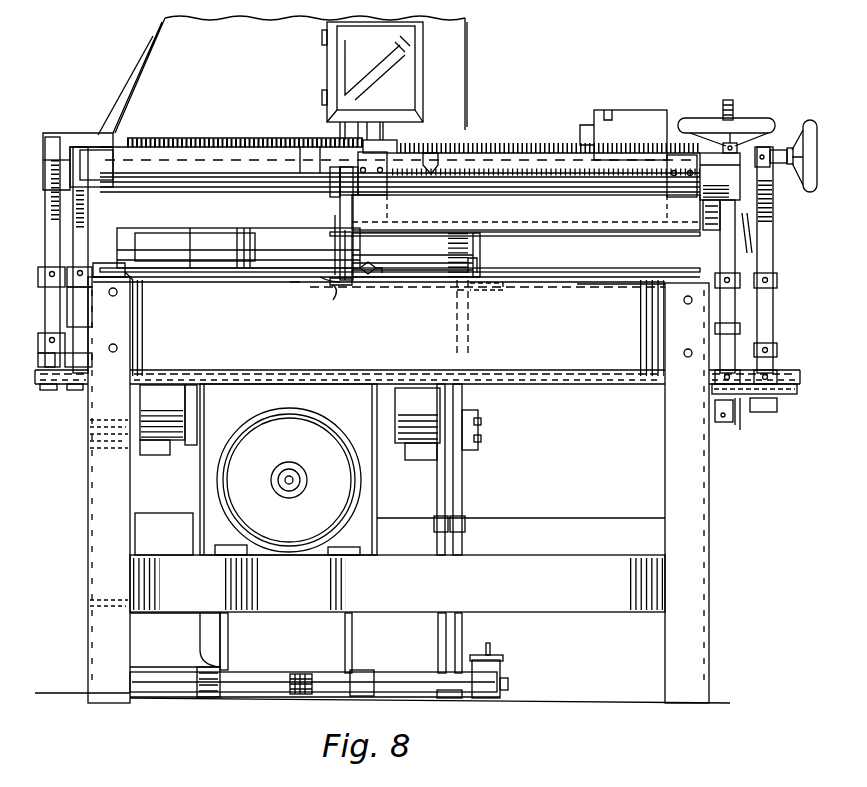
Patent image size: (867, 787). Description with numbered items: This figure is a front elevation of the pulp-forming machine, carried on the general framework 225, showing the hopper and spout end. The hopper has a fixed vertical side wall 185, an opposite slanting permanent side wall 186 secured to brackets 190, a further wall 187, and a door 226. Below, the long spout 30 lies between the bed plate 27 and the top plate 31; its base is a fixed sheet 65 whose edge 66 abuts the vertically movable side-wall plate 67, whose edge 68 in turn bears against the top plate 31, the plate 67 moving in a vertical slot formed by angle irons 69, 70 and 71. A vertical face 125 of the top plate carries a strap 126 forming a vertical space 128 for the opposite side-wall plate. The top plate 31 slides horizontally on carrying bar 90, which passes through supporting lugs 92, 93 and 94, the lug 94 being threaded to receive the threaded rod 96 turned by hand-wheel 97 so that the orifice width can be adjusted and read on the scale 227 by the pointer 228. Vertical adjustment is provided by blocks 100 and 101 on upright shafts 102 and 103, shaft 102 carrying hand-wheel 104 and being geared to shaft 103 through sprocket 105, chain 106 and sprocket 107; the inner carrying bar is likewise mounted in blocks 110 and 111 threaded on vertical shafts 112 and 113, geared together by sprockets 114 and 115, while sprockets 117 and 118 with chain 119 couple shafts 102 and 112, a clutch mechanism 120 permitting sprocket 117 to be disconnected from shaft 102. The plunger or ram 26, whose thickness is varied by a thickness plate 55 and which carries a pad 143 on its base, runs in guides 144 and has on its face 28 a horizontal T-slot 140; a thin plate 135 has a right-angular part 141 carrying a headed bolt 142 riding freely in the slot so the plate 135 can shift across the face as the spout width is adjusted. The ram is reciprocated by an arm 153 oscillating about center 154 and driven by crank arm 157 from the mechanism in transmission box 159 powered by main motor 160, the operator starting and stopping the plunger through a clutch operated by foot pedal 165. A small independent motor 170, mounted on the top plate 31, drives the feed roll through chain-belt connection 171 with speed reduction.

The plunger 26 is at (241, 282).
The bed plate 27 is at (320, 282).
The plunger face 28 is at (297, 278).
The spout 30 is at (432, 250).
The top plate 31 is at (610, 238).
The thickness plate 55 is at (275, 238).
The bed plate sheet 65 is at (333, 285).
The edge 66 is at (490, 278).
The spout side-wall plate 67 is at (474, 246).
The edge 68 is at (465, 248).
The angle iron 69 is at (480, 265).
The angle iron 70 is at (457, 322).
The angle iron 71 is at (475, 305).
The carrying bar 90 is at (222, 162).
The supporting lug 92 is at (330, 155).
The supporting lug 93 is at (676, 165).
The supporting lug 94 is at (395, 145).
The threaded rod 96 is at (555, 150).
The hand-wheel 97 is at (784, 260).
The block 100 is at (718, 165).
The block 101 is at (103, 153).
The upright shaft 102 is at (740, 264).
The upright shaft 103 is at (88, 220).
The hand-wheel 104 is at (740, 148).
The sprocket 105 is at (710, 390).
The chain 106 is at (575, 420).
The sprocket 107 is at (85, 392).
The block 110 is at (714, 146).
The block 111 is at (55, 137).
The vertical shaft 112 is at (765, 255).
The vertical shaft 113 is at (50, 227).
The sprocket 114 is at (782, 382).
The sprocket 115 is at (80, 392).
The sprocket 117 is at (725, 422).
The sprocket 118 is at (758, 412).
The chain 119 is at (750, 420).
The clutch mechanism 120 is at (727, 440).
The vertical face of top plate 125 is at (335, 222).
The leg 126 is at (345, 185).
The vertical space 128 is at (385, 198).
The thin plate 135 is at (333, 282).
The T-slot 140 is at (156, 269).
The right angular part 141 is at (366, 262).
The headed bolt 142 is at (380, 270).
The thickness pad 143 is at (238, 240).
The guide 144 is at (120, 283).
The arm 153 is at (474, 640).
The center 154 is at (540, 678).
The crank arm 157 is at (463, 486).
The transmission box 159 is at (258, 413).
The main motor 160 is at (287, 489).
The foot pedal 165 is at (300, 697).
The motor 170 is at (607, 112).
The chain-belt connection 171 is at (733, 118).
The fixed vertical side wall 185 is at (468, 60).
The slanting side wall 186 is at (160, 32).
The hopper wall 187 is at (252, 78).
The bracket 190 is at (146, 58).
The general framework 225 is at (85, 580).
The door 226 is at (405, 38).
The scale 227 is at (512, 170).
The pointer 228 is at (440, 157).